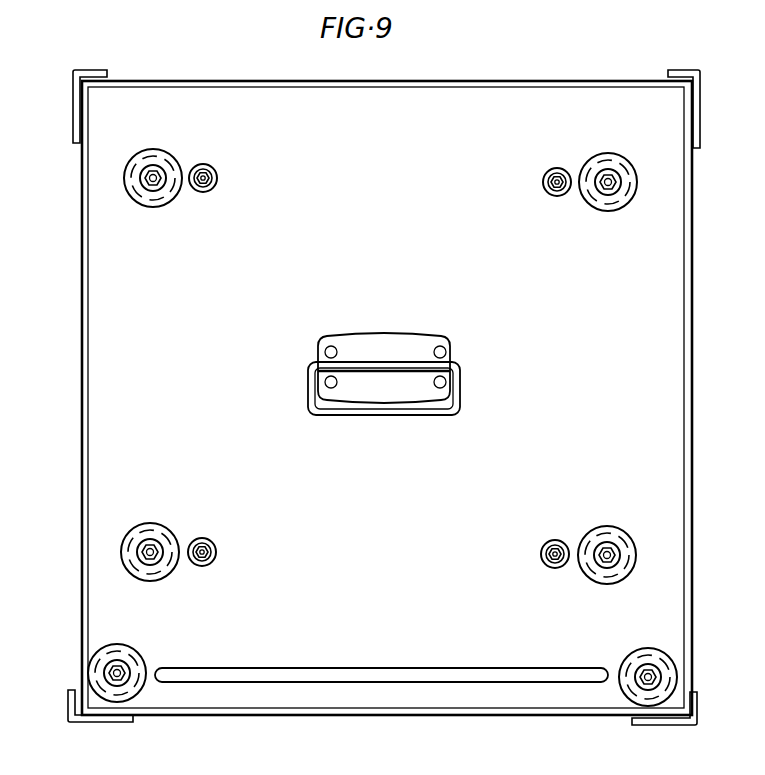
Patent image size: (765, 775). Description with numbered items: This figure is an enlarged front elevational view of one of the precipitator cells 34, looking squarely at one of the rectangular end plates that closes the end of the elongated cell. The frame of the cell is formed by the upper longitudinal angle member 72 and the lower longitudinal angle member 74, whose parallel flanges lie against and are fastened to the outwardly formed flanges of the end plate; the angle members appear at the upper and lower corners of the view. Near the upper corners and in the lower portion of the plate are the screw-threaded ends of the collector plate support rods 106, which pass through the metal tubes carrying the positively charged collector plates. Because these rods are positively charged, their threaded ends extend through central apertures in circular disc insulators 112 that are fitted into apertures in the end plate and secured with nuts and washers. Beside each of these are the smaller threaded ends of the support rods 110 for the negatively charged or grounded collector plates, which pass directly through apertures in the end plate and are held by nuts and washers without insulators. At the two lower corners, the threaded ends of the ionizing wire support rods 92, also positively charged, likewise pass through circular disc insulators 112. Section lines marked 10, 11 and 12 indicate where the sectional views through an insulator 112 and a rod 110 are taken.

The precipitator cell 34 is at (498, 77).
The upper longitudinal angle member 72 is at (73, 95).
The lower longitudinal angle member 74 is at (68, 700).
The ionizing wire support rod 92 is at (124, 669).
The collector plate support rod 106 is at (150, 185).
The support rod 110 is at (213, 176).
The circular disc insulator 112 is at (166, 152).
The section line 10- 10 is at (608, 240).
The section line 11- 11 is at (648, 753).
The section line 12- 12 is at (204, 238).